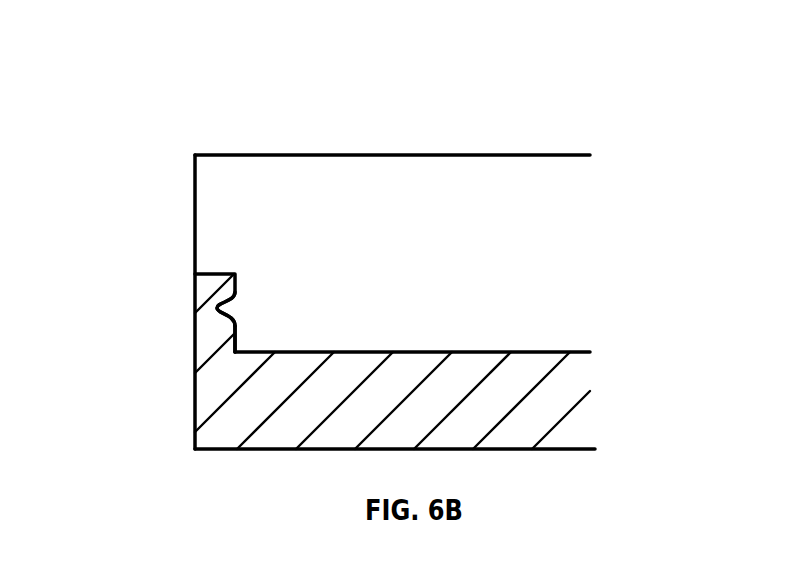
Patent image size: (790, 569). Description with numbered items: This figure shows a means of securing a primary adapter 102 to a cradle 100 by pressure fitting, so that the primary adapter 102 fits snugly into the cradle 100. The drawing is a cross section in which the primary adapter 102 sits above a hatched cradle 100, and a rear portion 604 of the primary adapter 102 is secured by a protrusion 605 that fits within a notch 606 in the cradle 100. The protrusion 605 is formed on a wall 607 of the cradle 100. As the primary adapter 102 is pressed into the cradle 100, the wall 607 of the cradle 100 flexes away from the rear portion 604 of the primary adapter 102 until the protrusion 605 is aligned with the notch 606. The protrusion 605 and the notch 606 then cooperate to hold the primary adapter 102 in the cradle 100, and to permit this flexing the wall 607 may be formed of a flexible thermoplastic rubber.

The cradle 100 is at (532, 450).
The primary adapter 102 is at (218, 155).
The rear portion 604 is at (558, 300).
The protrusion 605 is at (222, 308).
The notch 606 is at (227, 332).
The wall 607 is at (197, 274).